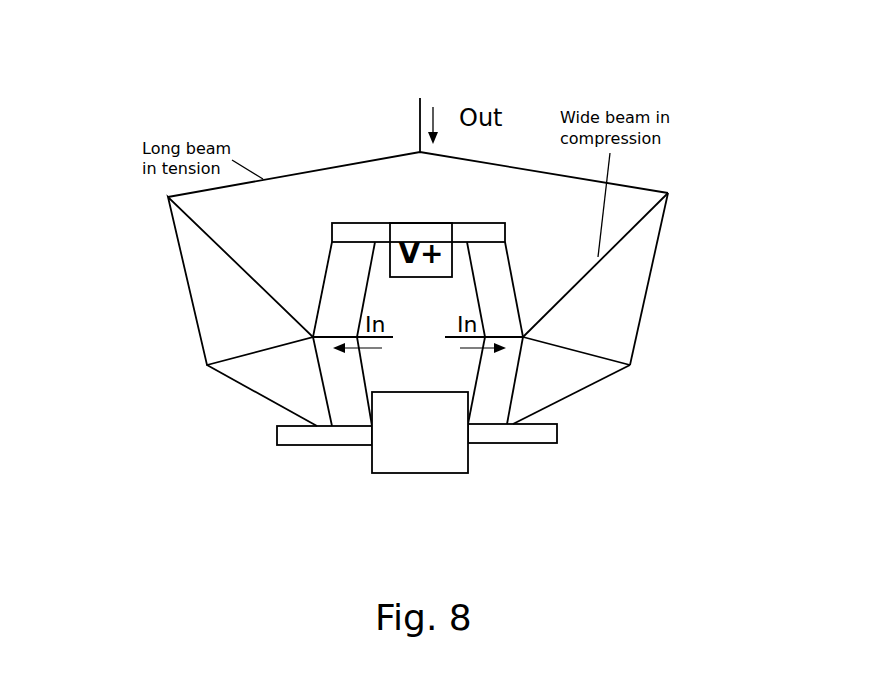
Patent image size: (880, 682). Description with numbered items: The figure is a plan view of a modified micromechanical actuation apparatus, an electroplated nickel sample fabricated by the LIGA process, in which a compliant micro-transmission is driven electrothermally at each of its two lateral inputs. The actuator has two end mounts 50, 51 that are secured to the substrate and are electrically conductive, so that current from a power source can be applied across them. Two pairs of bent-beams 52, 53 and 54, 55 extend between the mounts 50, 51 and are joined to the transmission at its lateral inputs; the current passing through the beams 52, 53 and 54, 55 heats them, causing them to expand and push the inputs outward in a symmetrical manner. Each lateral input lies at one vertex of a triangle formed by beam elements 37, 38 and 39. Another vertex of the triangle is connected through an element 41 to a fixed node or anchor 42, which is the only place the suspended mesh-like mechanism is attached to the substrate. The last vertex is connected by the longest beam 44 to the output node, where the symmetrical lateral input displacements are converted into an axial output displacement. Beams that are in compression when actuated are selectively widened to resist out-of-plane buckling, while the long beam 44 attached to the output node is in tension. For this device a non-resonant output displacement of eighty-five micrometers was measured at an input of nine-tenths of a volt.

The beam element 37 is at (640, 222).
The beam element 38 is at (655, 260).
The beam element 39 is at (593, 355).
The element 41 is at (563, 407).
The anchor 42 is at (337, 435).
The longest beam 44 is at (289, 170).
The end mount 50 is at (384, 225).
The end mount 51 is at (432, 463).
The bent-beam 52 is at (478, 290).
The bent-beam 53 is at (480, 367).
The bent-beam 54 is at (357, 305).
The bent-beam 55 is at (363, 377).